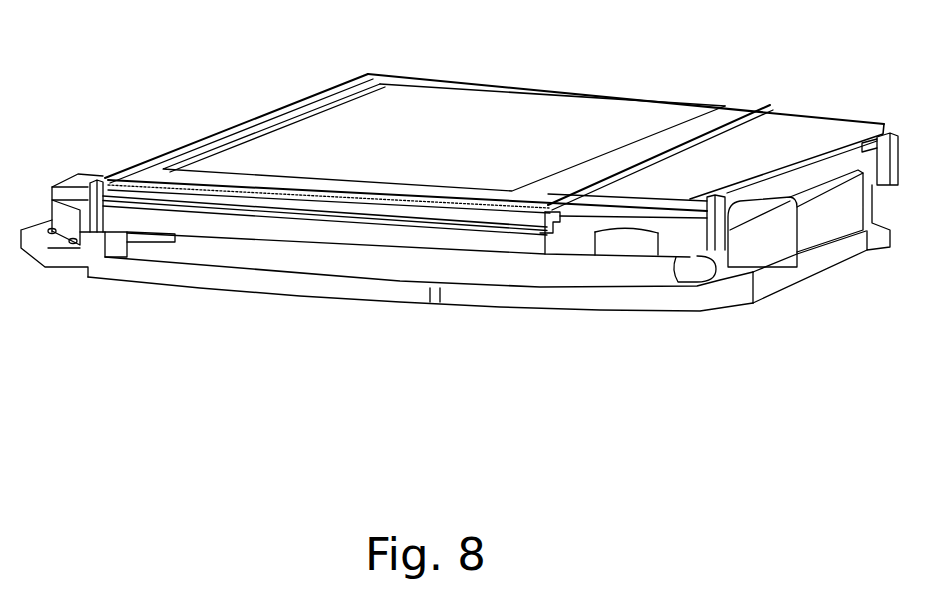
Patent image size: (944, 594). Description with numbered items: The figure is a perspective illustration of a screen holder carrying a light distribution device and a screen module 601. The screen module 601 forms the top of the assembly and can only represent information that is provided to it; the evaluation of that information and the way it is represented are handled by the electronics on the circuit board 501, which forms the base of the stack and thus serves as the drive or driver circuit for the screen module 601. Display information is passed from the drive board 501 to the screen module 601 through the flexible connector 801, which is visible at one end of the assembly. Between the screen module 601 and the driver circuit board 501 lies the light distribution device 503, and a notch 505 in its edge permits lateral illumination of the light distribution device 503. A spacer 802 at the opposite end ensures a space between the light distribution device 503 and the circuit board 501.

The screen module 601 is at (847, 123).
The light distribution device 503 is at (293, 230).
The notch 505 is at (608, 253).
The circuit board 501 is at (608, 314).
The flexible connector 801 is at (813, 230).
The spacer 802 is at (130, 263).